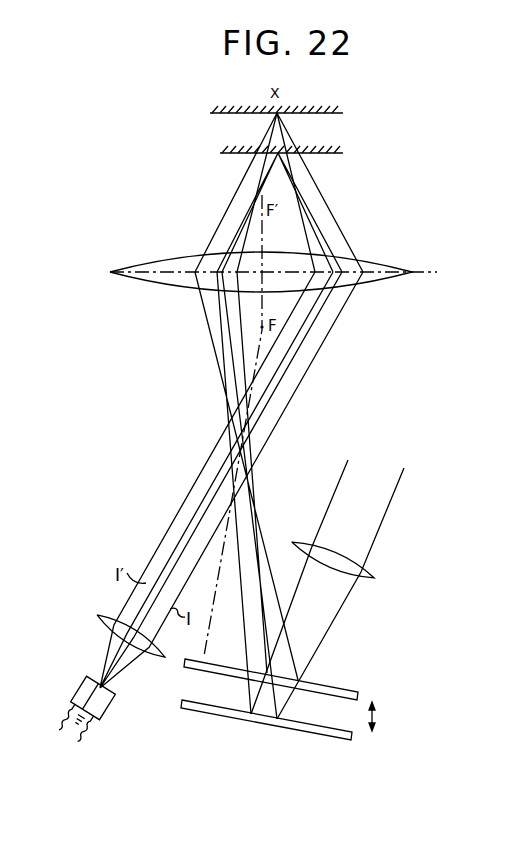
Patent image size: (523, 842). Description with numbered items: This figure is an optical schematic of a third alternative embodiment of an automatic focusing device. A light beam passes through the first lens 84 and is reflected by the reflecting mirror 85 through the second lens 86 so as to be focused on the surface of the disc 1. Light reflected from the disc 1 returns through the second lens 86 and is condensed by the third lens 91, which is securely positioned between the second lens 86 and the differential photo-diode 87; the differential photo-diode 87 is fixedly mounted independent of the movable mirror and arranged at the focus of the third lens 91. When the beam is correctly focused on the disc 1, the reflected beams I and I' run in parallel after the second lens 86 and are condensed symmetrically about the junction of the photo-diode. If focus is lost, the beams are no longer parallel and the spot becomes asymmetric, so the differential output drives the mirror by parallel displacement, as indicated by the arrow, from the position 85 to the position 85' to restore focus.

The disc 1 is at (344, 113).
The first lens 84 is at (378, 572).
The reflecting mirror 85 is at (271, 693).
The reflecting mirror in displaced position 85' is at (268, 740).
The second lens 86 is at (367, 262).
The differential photo-diode 87 is at (112, 710).
The third lens 91 is at (160, 658).